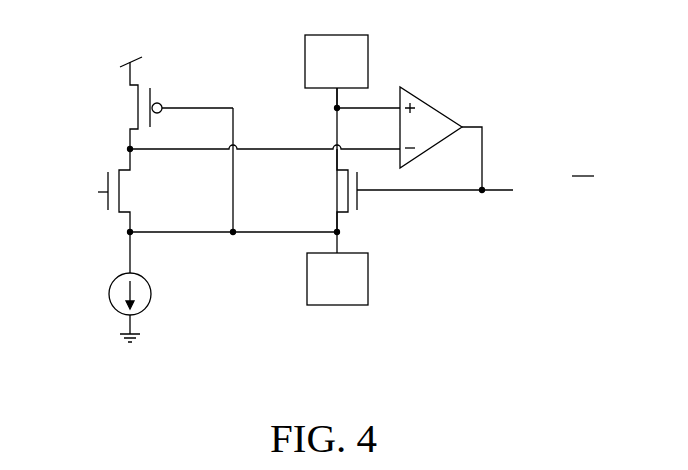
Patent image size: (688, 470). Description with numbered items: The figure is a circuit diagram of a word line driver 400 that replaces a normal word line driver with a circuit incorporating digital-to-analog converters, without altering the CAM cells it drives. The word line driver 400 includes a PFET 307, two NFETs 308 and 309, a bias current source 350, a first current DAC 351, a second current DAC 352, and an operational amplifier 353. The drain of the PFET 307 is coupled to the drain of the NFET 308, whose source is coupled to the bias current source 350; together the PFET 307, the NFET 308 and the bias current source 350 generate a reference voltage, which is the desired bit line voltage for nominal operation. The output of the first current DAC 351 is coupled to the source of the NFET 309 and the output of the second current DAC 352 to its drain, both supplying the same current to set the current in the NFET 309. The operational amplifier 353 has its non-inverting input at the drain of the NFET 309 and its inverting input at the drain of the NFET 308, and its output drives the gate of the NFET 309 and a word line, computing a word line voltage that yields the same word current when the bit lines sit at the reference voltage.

The PFET 307 is at (125, 108).
The NFET 308 is at (136, 192).
The NFET 309 is at (332, 190).
The bias current source 350 is at (167, 294).
The first current DAC 351 is at (337, 268).
The second current DAC 352 is at (336, 71).
The operational amplifier 353 is at (431, 90).
The word line driver 400 is at (323, 180).